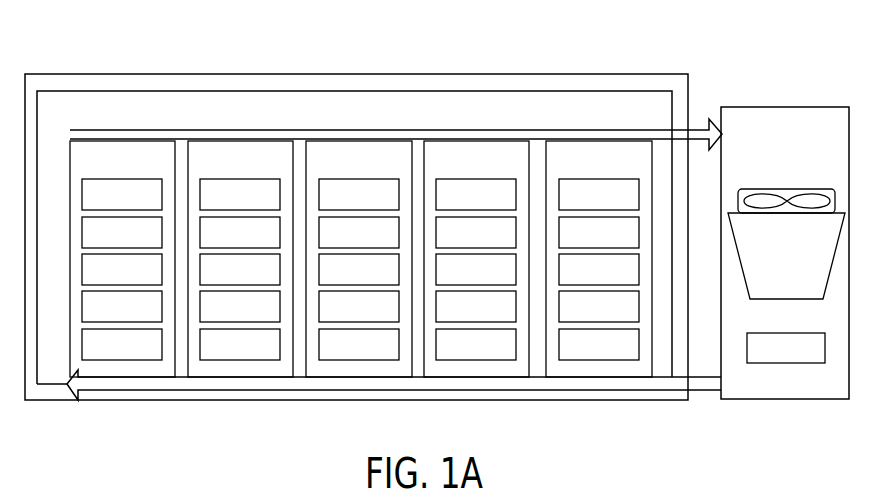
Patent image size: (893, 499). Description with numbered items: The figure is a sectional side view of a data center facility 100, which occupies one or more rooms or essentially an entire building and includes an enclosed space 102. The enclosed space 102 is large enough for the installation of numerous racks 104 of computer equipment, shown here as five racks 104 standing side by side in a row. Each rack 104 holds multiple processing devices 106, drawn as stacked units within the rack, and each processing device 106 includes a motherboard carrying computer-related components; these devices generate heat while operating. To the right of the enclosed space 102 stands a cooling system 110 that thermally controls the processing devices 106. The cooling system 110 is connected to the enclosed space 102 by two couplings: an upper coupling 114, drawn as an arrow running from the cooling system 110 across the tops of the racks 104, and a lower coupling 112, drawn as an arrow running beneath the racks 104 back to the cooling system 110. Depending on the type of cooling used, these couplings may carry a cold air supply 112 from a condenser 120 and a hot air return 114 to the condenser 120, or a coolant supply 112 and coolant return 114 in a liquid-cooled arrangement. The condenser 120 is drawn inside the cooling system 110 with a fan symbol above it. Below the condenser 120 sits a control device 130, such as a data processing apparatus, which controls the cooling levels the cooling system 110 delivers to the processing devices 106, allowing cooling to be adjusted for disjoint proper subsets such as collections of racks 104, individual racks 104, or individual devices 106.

The data center facility 100 is at (147, 58).
The enclosed space 102 is at (74, 120).
The rack 104 is at (136, 166).
The processing device 106 is at (136, 204).
The cooling system 110 is at (795, 135).
The coupling (cold air supply / coolant supply) 112 is at (703, 390).
The coupling (hot air return / coolant return) 114 is at (698, 129).
The condenser 120 is at (801, 297).
The control device 130 is at (800, 358).